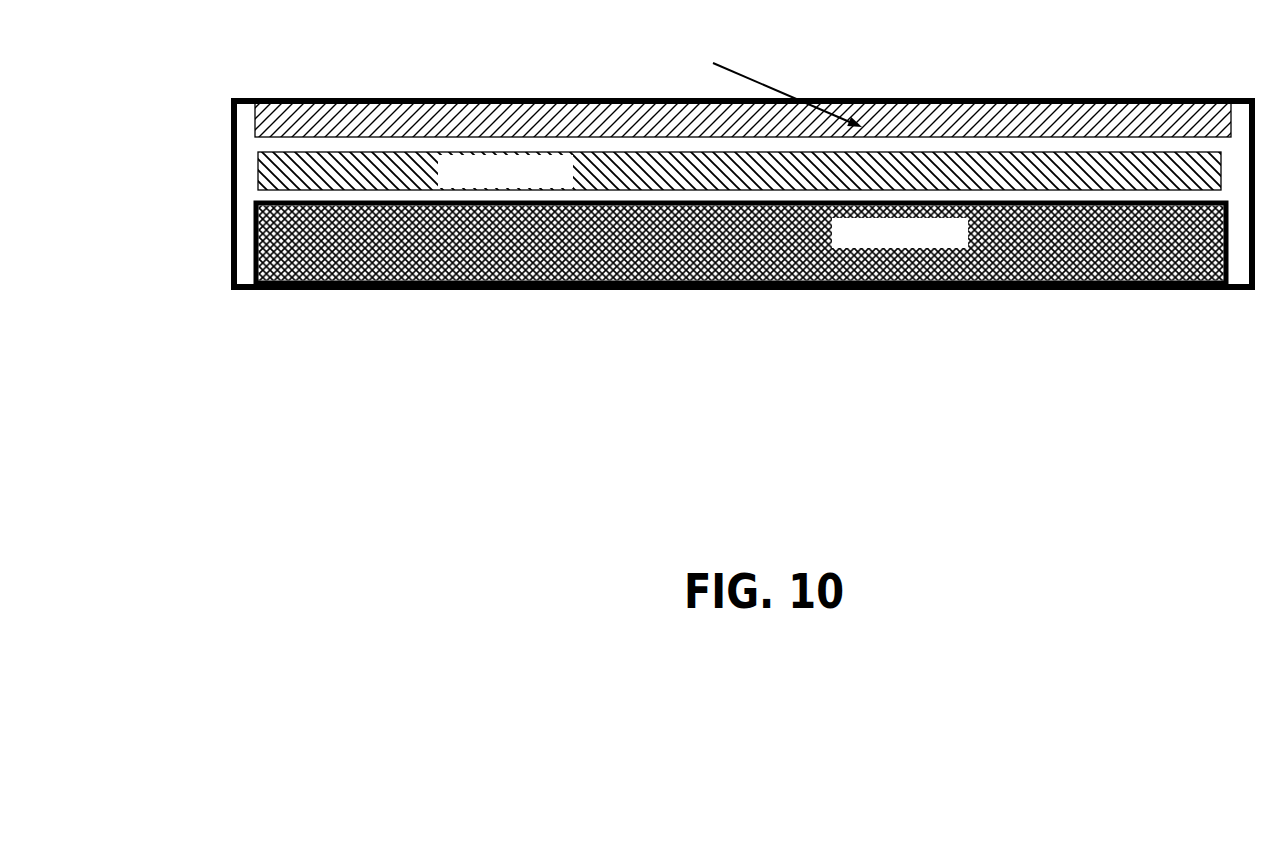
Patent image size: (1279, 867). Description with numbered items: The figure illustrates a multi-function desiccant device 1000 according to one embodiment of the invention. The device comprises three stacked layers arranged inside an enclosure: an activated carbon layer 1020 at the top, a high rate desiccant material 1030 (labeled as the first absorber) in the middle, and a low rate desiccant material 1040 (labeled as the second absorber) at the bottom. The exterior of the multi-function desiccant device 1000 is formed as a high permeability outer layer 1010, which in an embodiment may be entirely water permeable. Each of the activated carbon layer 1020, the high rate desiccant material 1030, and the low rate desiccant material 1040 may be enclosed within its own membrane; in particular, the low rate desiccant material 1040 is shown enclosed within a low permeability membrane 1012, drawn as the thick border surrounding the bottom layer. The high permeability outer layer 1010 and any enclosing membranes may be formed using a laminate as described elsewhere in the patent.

The multi-function desiccant device 1000 is at (693, 292).
The high permeability outer layer 1010 is at (1232, 297).
The low permeability membrane 1012 is at (741, 281).
The activated carbon layer 1020 is at (255, 117).
The high rate desiccant material 1030 is at (258, 172).
The low rate desiccant material 1040 is at (256, 246).